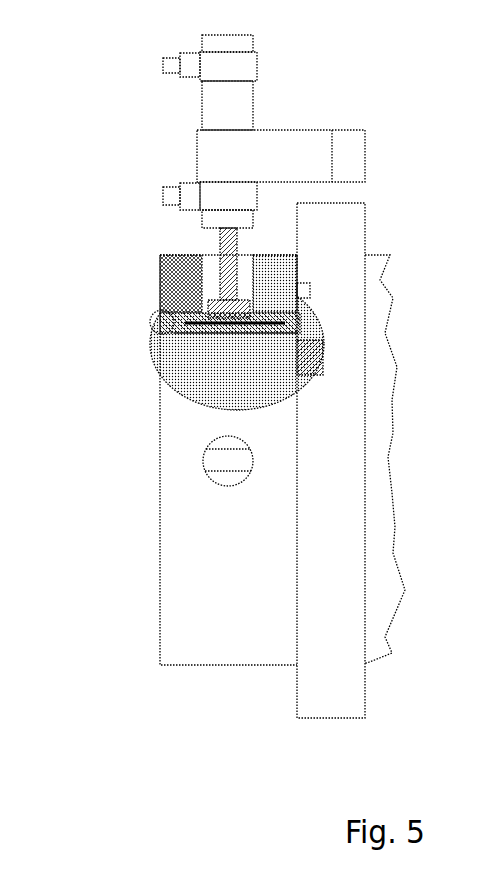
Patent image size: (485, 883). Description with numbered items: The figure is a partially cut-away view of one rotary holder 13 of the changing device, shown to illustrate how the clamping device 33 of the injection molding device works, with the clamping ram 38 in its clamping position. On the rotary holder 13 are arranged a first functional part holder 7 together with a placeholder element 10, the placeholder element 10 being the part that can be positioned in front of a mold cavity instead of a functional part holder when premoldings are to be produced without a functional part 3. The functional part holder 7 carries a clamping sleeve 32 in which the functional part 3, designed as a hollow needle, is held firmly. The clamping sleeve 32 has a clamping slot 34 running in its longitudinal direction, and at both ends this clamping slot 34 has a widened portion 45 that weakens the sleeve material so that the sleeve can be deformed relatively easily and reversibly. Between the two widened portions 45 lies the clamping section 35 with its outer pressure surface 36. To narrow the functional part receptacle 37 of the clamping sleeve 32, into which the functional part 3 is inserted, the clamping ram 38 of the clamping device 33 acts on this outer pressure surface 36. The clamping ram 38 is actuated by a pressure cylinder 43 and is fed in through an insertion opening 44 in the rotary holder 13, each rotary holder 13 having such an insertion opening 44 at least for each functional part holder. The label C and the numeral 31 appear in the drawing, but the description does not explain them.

The functional part 3 is at (177, 335).
The first functional part holder 7 is at (307, 317).
The placeholder element 10 is at (207, 472).
The rotary holder 13 is at (170, 557).
The plate 31 is at (210, 324).
The clamping sleeve 32 is at (285, 323).
The clamping device 33 is at (153, 96).
The clamping slot 34 is at (277, 325).
The clamping section 35 is at (258, 318).
The outer pressure surface 36 is at (253, 318).
The functional part receptacle 37 is at (230, 325).
The clamping ram 38 is at (222, 265).
The pressure cylinder 43 is at (233, 45).
The insertion opening 44 is at (207, 282).
The widened portion 45 is at (278, 318).
The contact point C is at (160, 313).